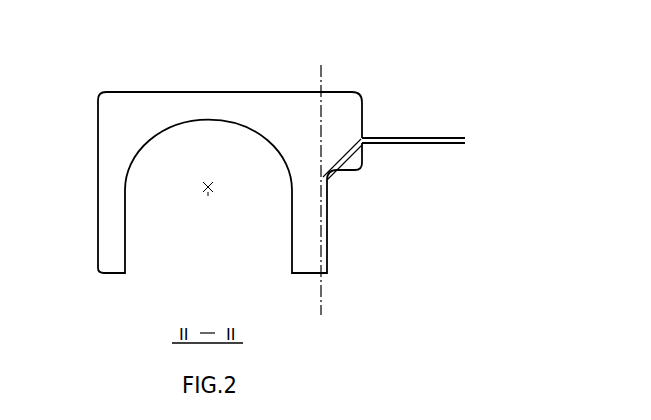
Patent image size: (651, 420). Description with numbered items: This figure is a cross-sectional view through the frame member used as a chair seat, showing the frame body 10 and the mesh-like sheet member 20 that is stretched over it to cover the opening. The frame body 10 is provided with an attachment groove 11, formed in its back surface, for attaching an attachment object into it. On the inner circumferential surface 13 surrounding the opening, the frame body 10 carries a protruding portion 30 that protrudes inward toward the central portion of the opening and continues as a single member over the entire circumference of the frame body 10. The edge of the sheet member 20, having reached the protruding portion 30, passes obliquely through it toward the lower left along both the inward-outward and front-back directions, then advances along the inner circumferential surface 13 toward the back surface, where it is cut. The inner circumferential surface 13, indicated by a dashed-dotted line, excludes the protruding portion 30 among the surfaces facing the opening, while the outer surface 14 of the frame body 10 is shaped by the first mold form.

The frame body 10 is at (123, 93).
The attachment groove 11 is at (208, 195).
The inner circumferential surface 13 is at (328, 70).
The outer surface 14 is at (98, 190).
The sheet member 20 is at (407, 145).
The protruding portion 30 is at (355, 120).